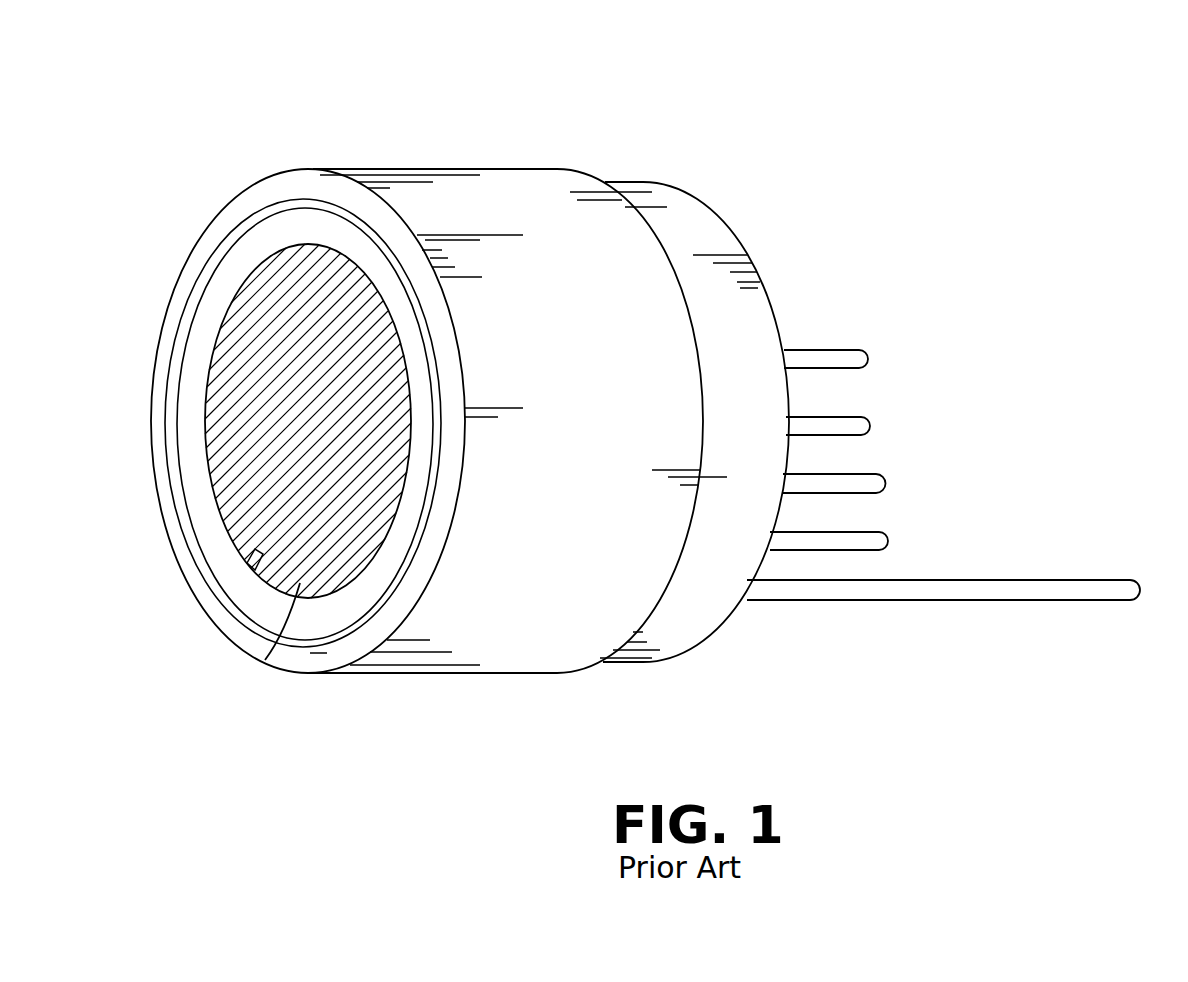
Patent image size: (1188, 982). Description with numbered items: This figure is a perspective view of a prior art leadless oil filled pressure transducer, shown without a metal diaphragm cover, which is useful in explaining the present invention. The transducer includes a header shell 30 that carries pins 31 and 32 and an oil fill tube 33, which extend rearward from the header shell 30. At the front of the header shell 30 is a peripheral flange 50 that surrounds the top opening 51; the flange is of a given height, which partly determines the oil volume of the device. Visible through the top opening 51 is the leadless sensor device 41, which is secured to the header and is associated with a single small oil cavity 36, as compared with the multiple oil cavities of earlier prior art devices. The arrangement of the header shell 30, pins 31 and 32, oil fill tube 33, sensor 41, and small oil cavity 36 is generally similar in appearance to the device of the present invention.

The header shell 30 is at (510, 170).
The pin 31 is at (868, 355).
The pin 32 is at (872, 425).
The oil fill tube 33 is at (1125, 580).
The oil cavity 36 is at (247, 563).
The leadless sensor device 41 is at (337, 248).
The peripheral flange 50 is at (285, 210).
The top opening 51 is at (368, 253).